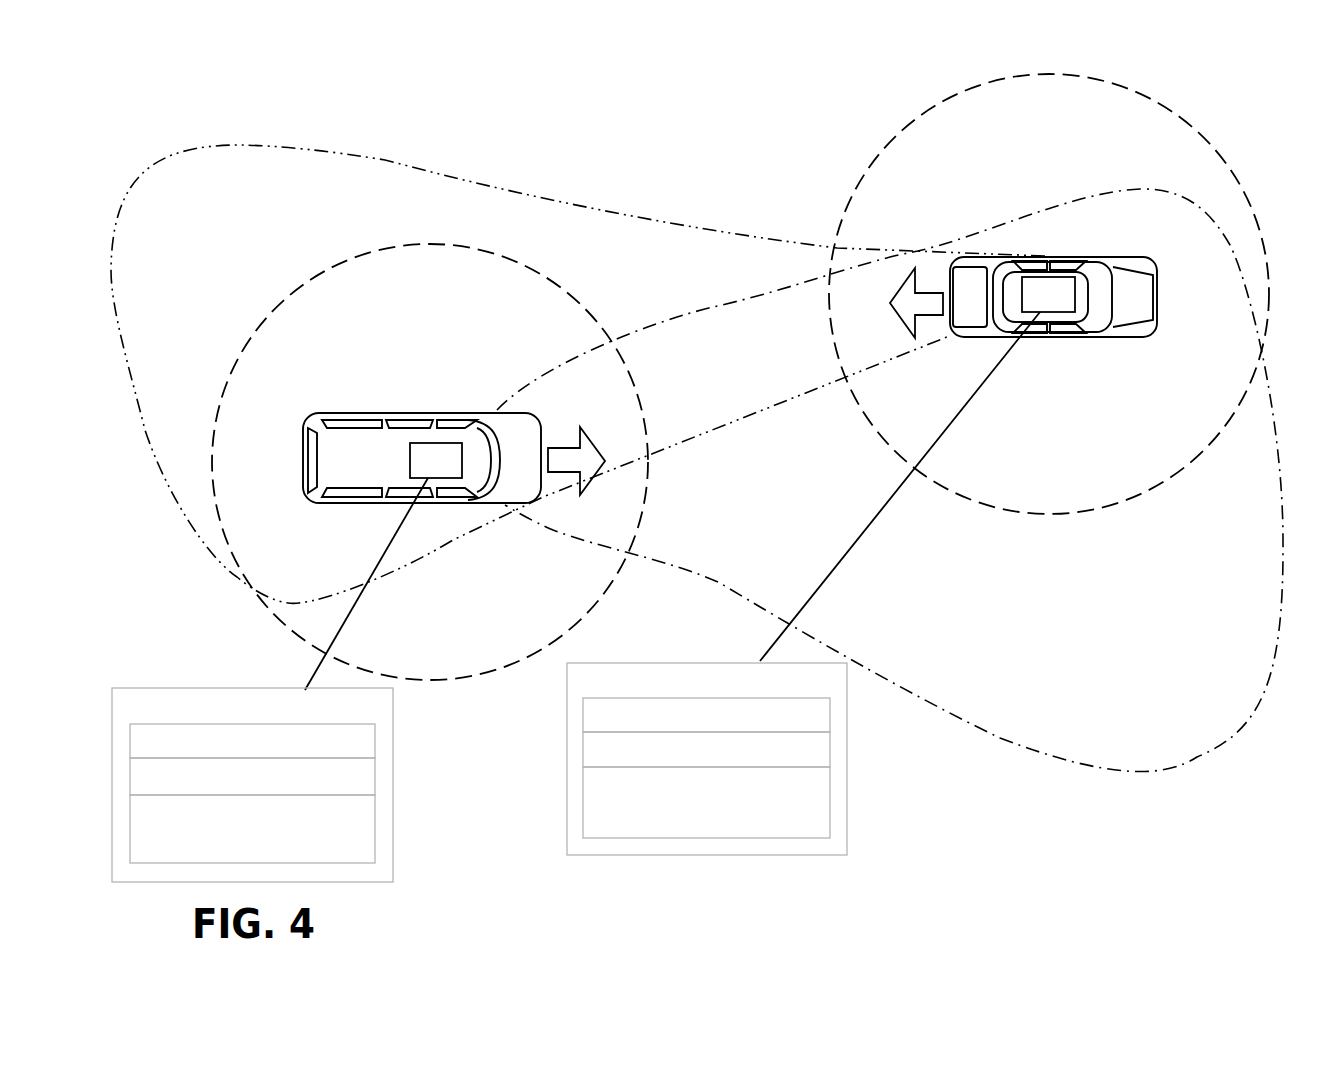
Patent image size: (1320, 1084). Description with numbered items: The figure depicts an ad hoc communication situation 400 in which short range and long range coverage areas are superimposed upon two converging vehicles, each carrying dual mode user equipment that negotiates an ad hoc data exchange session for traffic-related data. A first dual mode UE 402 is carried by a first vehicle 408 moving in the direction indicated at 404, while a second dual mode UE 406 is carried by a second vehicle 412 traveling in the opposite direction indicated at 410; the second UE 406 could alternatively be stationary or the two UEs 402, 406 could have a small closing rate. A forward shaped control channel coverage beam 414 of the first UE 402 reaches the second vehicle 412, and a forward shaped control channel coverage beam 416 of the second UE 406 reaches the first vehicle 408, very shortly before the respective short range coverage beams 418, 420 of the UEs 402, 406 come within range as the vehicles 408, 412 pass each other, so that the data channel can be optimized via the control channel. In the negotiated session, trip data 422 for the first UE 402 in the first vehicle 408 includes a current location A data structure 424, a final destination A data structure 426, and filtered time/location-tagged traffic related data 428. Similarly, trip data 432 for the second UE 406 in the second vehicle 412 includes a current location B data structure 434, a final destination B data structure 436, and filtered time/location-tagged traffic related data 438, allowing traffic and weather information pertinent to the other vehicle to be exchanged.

The ad hoc communication situation 400 is at (1250, 116).
The first dual mode UE 402 is at (917, 469).
The direction of movement of first UE 404 is at (903, 330).
The second dual mode UE 406 is at (383, 566).
The first vehicle 408 is at (1128, 338).
The direction of second vehicle 410 is at (594, 440).
The second vehicle 412 is at (394, 418).
The forward shaped control channel coverage beam of first UE 414 is at (385, 163).
The forward shaped control channel coverage beam of second UE 416 is at (1195, 757).
The short range coverage beam of first UE 418 is at (1135, 497).
The short range coverage beam of second UE 420 is at (422, 680).
The trip data 422 is at (707, 759).
The current location A data structure 424 is at (706, 715).
The final destination A data structure 426 is at (706, 749).
The filtered time/location-tagged traffic related data 428 is at (706, 802).
The trip data 432 is at (252, 785).
The current location B data structure 434 is at (252, 741).
The final destination B data structure 436 is at (252, 776).
The filtered time/location-tagged traffic related data 438 is at (252, 829).